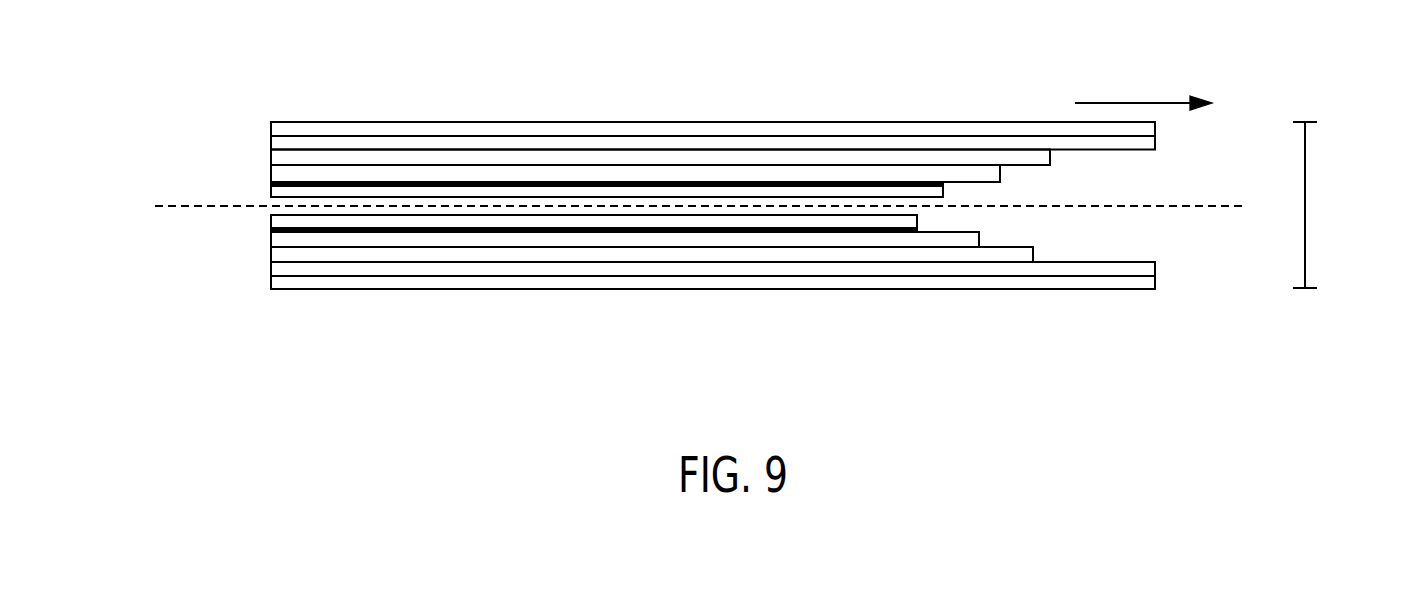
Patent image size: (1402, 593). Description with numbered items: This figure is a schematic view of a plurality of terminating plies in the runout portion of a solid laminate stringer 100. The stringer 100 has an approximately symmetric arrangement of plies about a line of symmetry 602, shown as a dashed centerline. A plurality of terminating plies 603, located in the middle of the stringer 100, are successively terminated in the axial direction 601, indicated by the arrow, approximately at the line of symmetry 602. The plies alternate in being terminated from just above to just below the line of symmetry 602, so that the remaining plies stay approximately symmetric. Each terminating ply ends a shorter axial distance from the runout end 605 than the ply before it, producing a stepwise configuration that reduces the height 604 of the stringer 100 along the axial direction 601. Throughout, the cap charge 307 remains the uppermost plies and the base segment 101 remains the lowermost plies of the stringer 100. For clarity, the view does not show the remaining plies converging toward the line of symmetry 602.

The stringer 100 is at (623, 207).
The cap charge 307 is at (268, 122).
The plurality of terminating plies 603 is at (268, 151).
The base segment 101 is at (679, 277).
The axial direction 601 is at (1130, 102).
The line of symmetry 602 is at (1205, 206).
The height 604 is at (1305, 205).
The runout end 605 is at (1155, 283).